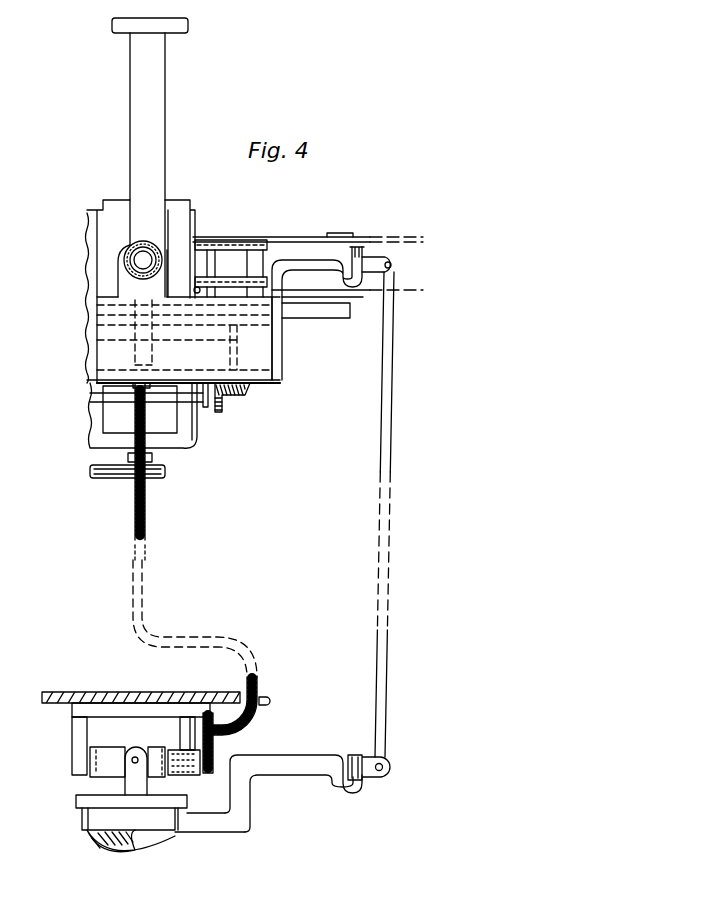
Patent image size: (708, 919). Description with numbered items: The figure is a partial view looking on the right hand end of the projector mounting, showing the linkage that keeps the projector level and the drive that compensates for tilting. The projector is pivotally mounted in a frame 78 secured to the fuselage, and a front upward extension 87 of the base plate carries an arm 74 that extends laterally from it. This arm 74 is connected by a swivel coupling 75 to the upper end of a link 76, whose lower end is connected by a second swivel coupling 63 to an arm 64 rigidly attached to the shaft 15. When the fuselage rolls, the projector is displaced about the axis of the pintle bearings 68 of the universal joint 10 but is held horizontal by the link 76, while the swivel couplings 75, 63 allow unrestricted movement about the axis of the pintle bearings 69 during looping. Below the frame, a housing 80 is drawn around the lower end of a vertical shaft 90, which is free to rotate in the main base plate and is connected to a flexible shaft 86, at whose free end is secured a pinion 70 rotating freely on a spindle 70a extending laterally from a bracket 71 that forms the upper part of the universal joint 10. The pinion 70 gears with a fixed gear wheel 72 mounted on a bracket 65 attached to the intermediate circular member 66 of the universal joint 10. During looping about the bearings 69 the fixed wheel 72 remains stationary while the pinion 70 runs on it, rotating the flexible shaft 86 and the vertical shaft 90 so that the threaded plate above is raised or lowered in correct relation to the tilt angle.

The universal joint 10 is at (110, 768).
The shaft 15 is at (88, 833).
The swivel coupling 63 is at (372, 778).
The arm 64 is at (292, 762).
The bracket 65 is at (187, 778).
The intermediate circular member 66 is at (157, 765).
The pintle bearings 68 is at (132, 758).
The pintle bearings 69 is at (80, 757).
The pinion 70 is at (245, 716).
The spindle 70a is at (196, 722).
The bracket 71 is at (107, 708).
The fixed gear wheel 72 is at (212, 755).
The arm 74 is at (294, 270).
The swivel coupling 75 is at (377, 258).
The link 76 is at (384, 432).
The frame 78 is at (143, 124).
The housing 80 is at (108, 440).
The flexible shaft 86 is at (145, 503).
The front upward extension 87 is at (248, 383).
The vertical shaft 90 is at (132, 345).